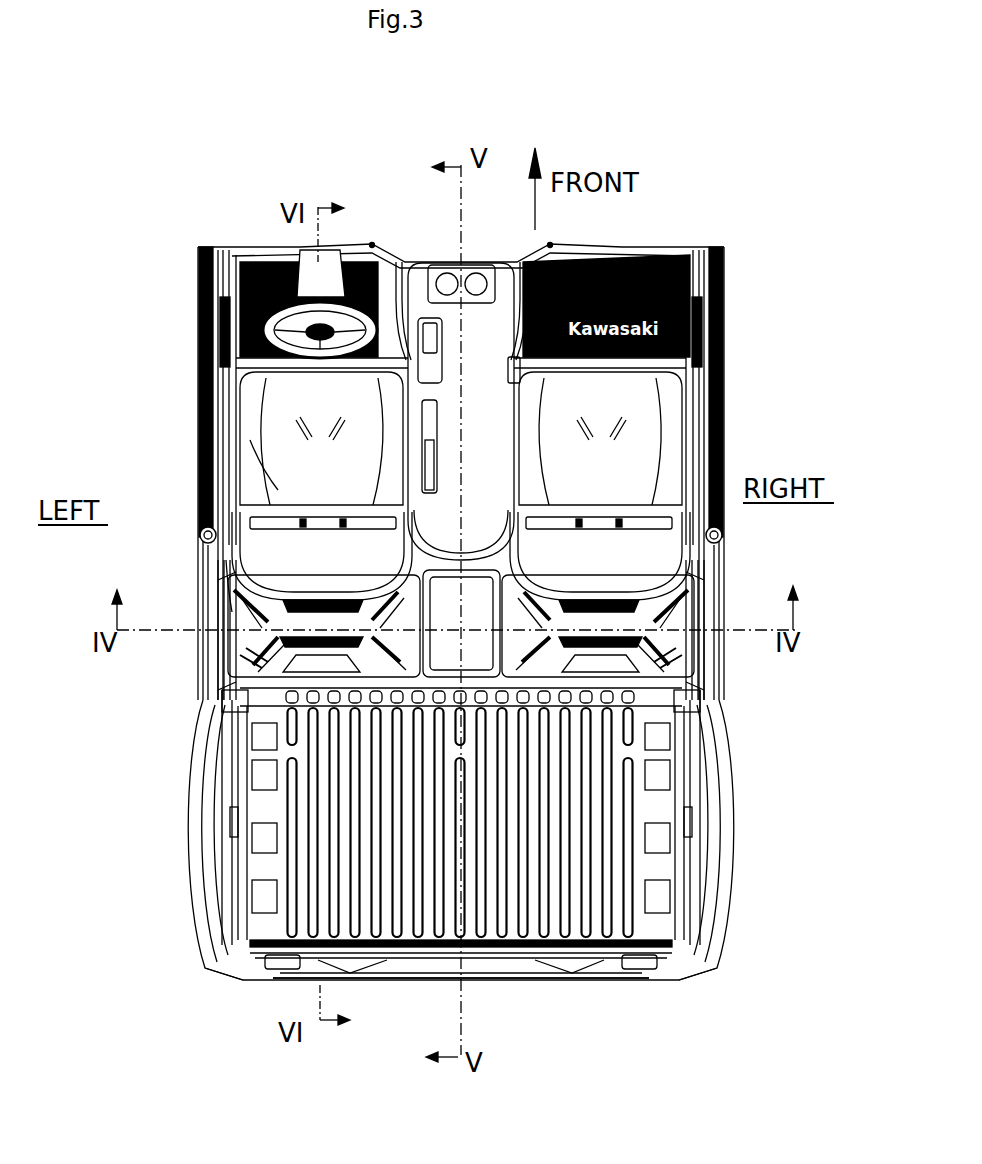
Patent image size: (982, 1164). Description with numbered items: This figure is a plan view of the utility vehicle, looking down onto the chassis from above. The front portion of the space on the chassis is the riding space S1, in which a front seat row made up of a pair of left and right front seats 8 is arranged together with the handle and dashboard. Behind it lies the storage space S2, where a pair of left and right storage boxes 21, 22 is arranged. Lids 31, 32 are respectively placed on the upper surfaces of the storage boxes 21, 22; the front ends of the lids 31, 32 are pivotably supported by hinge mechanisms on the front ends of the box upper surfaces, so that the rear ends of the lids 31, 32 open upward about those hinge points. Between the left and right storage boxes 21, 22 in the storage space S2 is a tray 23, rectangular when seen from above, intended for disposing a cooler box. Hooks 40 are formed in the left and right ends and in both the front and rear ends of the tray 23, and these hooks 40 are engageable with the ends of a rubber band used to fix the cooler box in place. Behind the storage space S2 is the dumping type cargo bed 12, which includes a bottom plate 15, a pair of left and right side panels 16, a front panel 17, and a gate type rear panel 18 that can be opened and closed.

The front seat 8 is at (295, 440).
The riding space S1 is at (272, 487).
The storage space S2 is at (226, 608).
The cargo bed 12 is at (186, 962).
The bottom plate 15 is at (540, 860).
The side panel 16 is at (228, 878).
The front panel 17 is at (358, 707).
The rear panel 18 is at (388, 962).
The left storage box 21 is at (228, 608).
The right storage box 22 is at (693, 597).
The tray 23 is at (478, 642).
The left lid 31 is at (256, 652).
The right lid 32 is at (662, 655).
The hook 40 is at (390, 610).